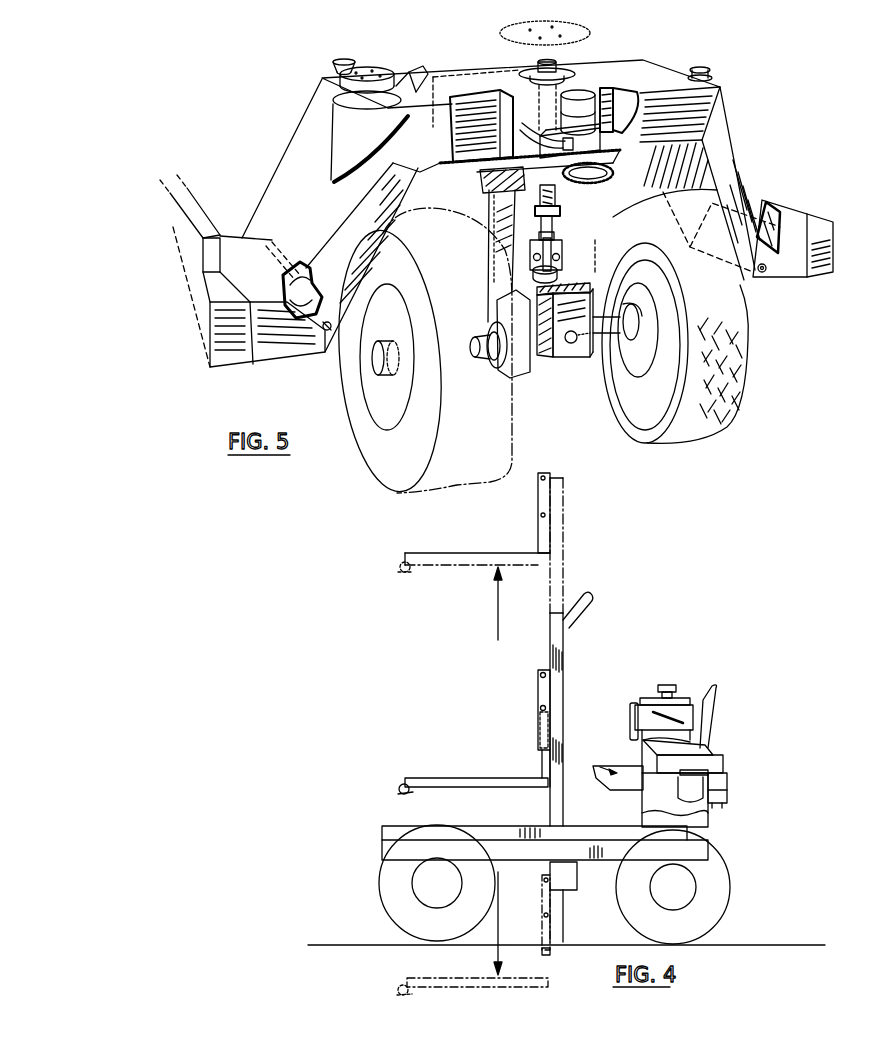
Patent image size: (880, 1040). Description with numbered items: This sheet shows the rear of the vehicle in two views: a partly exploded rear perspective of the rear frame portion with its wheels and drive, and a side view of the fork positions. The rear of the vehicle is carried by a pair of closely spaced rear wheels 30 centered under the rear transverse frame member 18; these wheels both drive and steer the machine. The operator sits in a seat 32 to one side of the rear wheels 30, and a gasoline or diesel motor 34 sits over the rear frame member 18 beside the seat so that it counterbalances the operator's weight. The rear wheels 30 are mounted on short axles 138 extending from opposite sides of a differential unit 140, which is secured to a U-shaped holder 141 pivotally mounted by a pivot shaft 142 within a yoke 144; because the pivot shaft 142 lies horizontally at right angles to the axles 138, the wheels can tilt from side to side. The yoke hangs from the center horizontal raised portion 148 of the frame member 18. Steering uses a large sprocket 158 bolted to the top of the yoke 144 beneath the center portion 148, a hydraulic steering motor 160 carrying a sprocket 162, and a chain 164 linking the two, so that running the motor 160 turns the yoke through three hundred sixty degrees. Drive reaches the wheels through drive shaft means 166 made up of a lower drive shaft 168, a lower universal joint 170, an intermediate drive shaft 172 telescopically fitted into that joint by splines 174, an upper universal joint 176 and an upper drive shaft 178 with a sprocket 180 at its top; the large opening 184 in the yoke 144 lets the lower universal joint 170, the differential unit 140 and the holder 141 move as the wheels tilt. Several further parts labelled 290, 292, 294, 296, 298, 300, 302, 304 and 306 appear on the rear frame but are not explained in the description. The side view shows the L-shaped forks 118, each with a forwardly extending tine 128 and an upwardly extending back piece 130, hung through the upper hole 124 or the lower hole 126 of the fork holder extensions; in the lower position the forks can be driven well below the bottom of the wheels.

In FIG. 5, the rear transverse frame member 18 is at (312, 92).
In FIG. 5, the rear wheels 30 is at (495, 452).
In FIG. 4, the seat 32 is at (716, 692).
In FIG. 4, the gasoline or diesel motor 34 is at (656, 695).
In FIG. 4, the forks 118 is at (440, 768).
In FIG. 4, the upper transverse hole 124 is at (538, 675).
In FIG. 4, the lower transverse hole 126 is at (538, 708).
In FIG. 4, the forwardly extending tine 128 is at (410, 780).
In FIG. 4, the upwardly extending back piece 130 is at (540, 762).
In FIG. 5, the short axles 138 is at (490, 360).
In FIG. 5, the differential unit 140 is at (514, 378).
In FIG. 5, the U-shaped holder 141 is at (556, 368).
In FIG. 5, the pivot shaft 142 is at (576, 344).
In FIG. 5, the yoke 144 is at (585, 342).
In FIG. 5, the center horizontal raised portion 148 is at (628, 65).
In FIG. 5, the large sprocket 158 is at (484, 178).
In FIG. 5, the hydraulic steering motor 160 is at (575, 86).
In FIG. 5, the sprocket 162 is at (610, 176).
In FIG. 5, the chain 164 is at (612, 156).
In FIG. 5, the drive shaft means 166 is at (586, 245).
In FIG. 5, the lower drive shaft 168 is at (535, 275).
In FIG. 5, the lower universal joint 170 is at (563, 242).
In FIG. 5, the intermediate drive shaft 172 is at (554, 226).
In FIG. 5, the splines 174 is at (532, 238).
In FIG. 5, the upper universal joint 176 is at (560, 208).
In FIG. 5, the upper drive shaft 178 is at (525, 88).
In FIG. 5, the sprocket 180 is at (590, 33).
In FIG. 5, the large opening 184 is at (500, 218).
In FIG. 5, the hidden panel edge 290 is at (481, 95).
In FIG. 5, the slanted side strip 292 is at (410, 176).
In FIG. 5, the filter assembly 294 is at (368, 68).
In FIG. 5, the bolt 296 is at (328, 332).
In FIG. 5, the clamp 298 is at (300, 270).
In FIG. 5, the bracket 300 is at (630, 91).
In FIG. 5, the right side panel 302 is at (735, 135).
In FIG. 5, the filler cap 304 is at (699, 67).
In FIG. 5, the bolt 306 is at (764, 273).